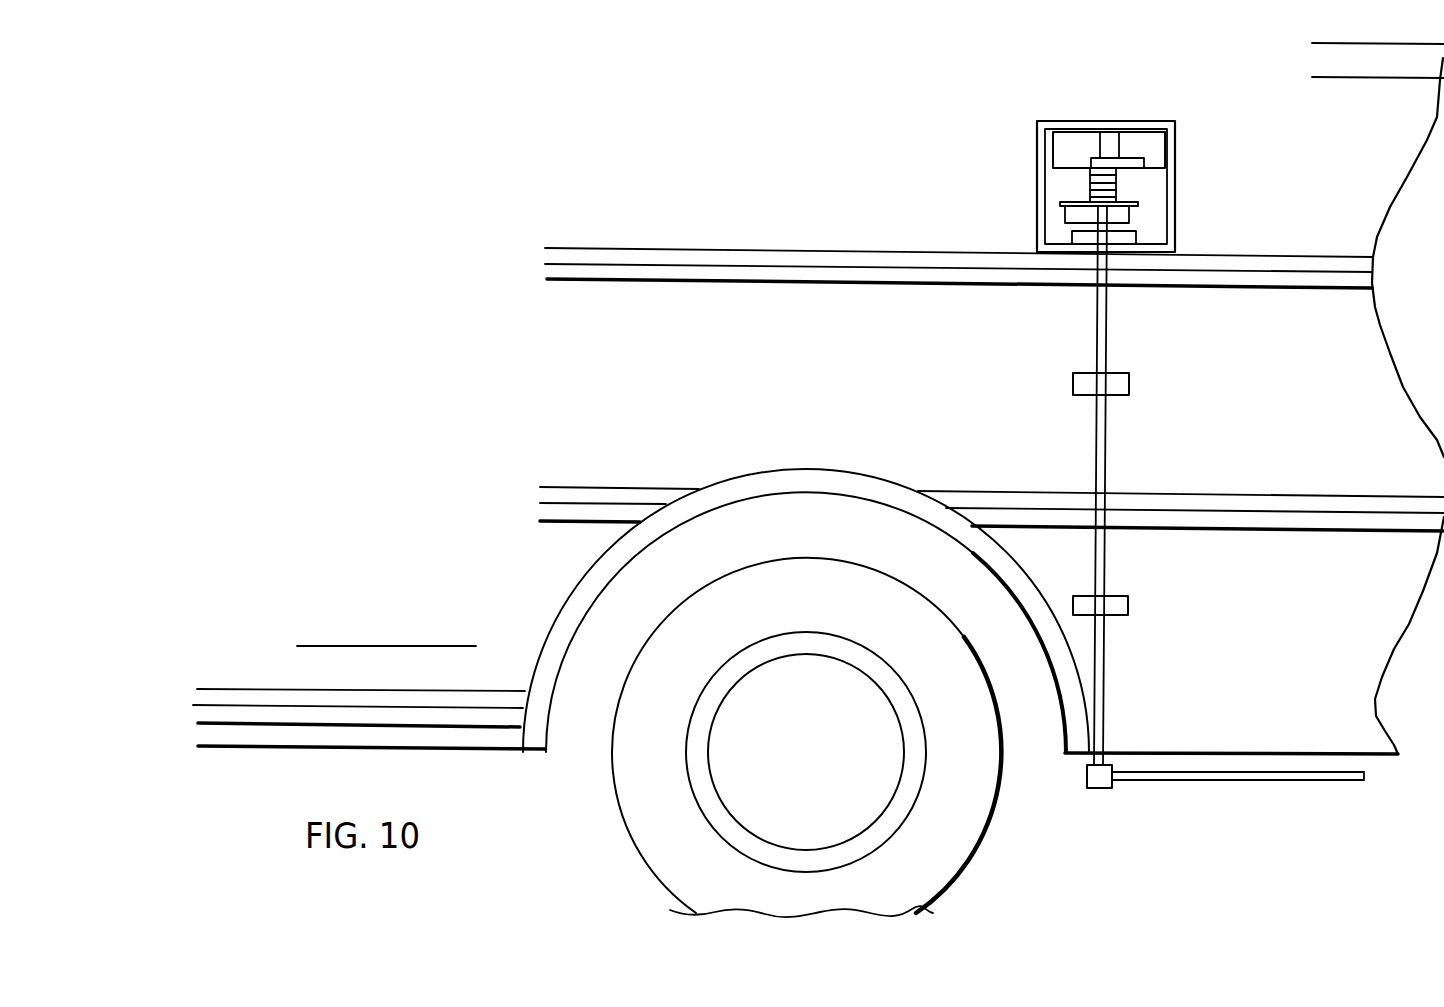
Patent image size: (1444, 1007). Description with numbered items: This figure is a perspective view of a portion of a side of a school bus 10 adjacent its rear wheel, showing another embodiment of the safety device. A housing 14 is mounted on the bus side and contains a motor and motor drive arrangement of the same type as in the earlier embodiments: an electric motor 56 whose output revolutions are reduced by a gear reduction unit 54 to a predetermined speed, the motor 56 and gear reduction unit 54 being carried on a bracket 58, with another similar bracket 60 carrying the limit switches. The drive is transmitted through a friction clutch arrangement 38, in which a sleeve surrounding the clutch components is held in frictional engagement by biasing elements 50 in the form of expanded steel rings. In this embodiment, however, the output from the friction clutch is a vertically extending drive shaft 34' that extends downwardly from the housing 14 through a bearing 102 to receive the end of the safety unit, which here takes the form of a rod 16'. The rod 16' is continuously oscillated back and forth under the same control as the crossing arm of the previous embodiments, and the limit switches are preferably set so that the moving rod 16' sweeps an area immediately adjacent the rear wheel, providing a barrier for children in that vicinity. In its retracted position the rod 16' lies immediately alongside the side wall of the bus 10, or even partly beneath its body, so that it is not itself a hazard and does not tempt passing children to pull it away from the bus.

The school bus 10 is at (705, 191).
The housing 14 is at (1175, 200).
The safety unit rod 16' is at (1225, 814).
The vertically extending drive shaft 34' is at (1057, 485).
The friction clutch arrangement 38 is at (1118, 183).
The biasing elements 50 is at (1088, 177).
The gear reduction unit 54 is at (1135, 160).
The electric motor 56 is at (1109, 140).
The bracket 58 is at (1053, 152).
The bracket 60 is at (1130, 213).
The bearing 102 is at (1133, 239).